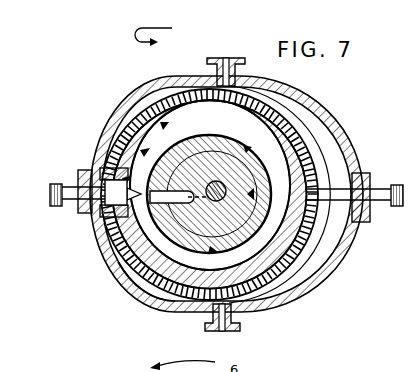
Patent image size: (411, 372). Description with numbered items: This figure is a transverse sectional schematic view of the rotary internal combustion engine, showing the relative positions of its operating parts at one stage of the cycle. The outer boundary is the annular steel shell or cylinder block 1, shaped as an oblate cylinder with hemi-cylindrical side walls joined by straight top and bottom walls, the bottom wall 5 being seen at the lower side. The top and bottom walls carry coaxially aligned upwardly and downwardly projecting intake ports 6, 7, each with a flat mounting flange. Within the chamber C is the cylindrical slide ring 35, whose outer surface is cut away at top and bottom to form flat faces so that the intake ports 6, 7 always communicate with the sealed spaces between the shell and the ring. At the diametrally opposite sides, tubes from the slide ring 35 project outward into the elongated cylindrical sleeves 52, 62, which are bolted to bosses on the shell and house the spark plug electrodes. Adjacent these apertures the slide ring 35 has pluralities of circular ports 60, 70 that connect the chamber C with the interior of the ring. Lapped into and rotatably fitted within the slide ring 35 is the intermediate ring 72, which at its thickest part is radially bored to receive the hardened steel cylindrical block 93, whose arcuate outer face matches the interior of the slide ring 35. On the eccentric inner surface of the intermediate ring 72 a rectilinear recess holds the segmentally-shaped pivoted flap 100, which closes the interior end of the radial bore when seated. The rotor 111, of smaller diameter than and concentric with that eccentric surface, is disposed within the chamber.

The shell or cylinder block 1 is at (165, 84).
The intake port 6 is at (228, 59).
The intake port 7 is at (222, 332).
The slide ring 35 is at (292, 118).
The sleeve 52 is at (72, 184).
The circular ports 60 is at (102, 236).
The sleeve 62 is at (380, 188).
The circular ports 70 is at (315, 155).
The intermediate ring 72 is at (268, 94).
The cylindrical block 93 is at (111, 258).
The flap 100 is at (110, 150).
The rotor 111 is at (147, 302).
The chamber C is at (330, 229).
The bottom wall 5 is at (407, 243).